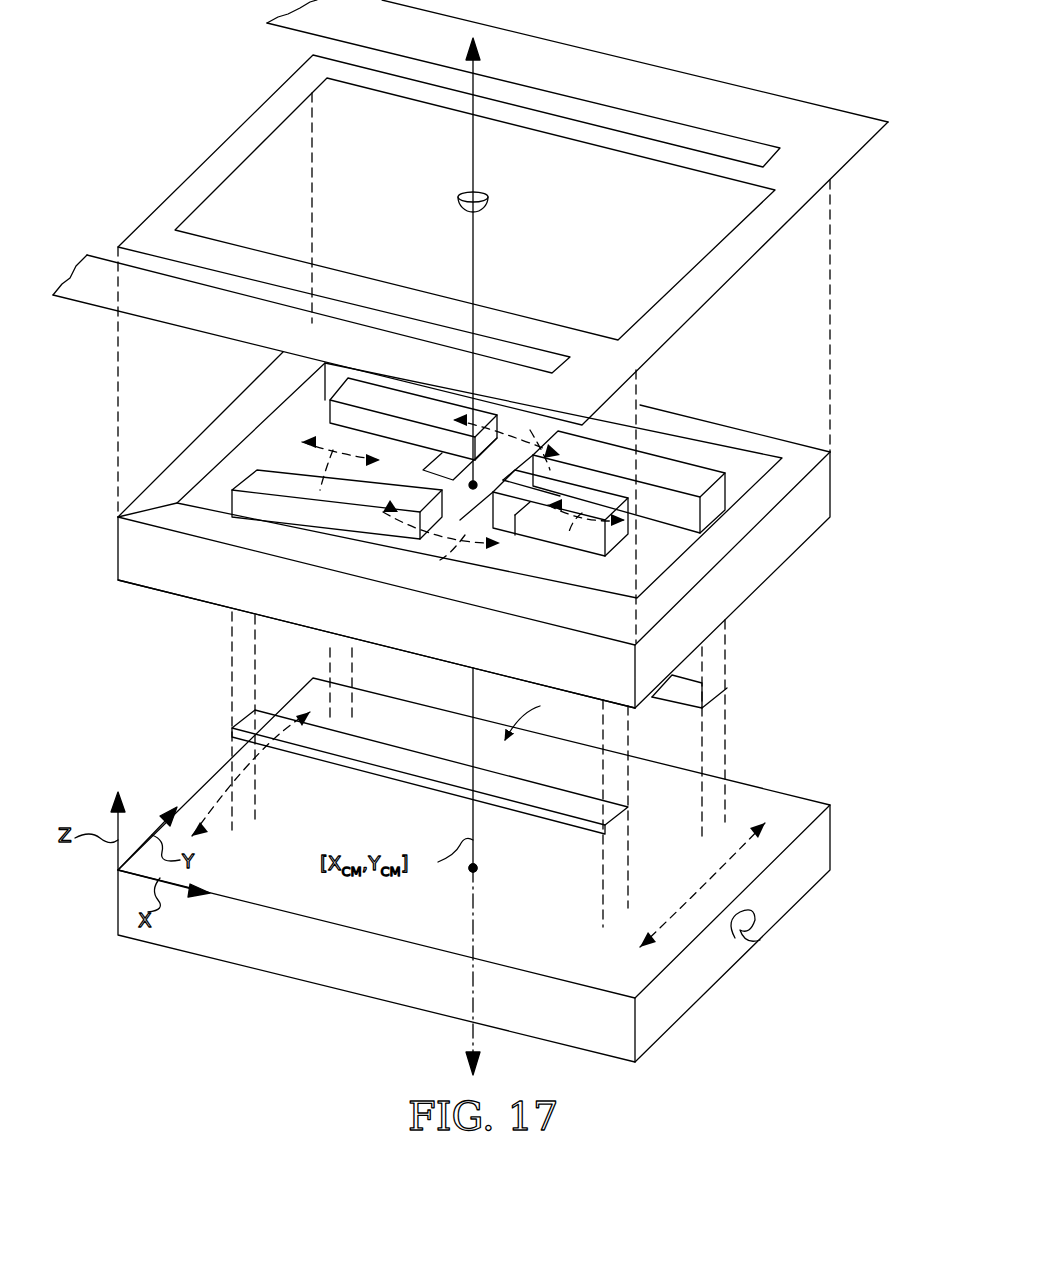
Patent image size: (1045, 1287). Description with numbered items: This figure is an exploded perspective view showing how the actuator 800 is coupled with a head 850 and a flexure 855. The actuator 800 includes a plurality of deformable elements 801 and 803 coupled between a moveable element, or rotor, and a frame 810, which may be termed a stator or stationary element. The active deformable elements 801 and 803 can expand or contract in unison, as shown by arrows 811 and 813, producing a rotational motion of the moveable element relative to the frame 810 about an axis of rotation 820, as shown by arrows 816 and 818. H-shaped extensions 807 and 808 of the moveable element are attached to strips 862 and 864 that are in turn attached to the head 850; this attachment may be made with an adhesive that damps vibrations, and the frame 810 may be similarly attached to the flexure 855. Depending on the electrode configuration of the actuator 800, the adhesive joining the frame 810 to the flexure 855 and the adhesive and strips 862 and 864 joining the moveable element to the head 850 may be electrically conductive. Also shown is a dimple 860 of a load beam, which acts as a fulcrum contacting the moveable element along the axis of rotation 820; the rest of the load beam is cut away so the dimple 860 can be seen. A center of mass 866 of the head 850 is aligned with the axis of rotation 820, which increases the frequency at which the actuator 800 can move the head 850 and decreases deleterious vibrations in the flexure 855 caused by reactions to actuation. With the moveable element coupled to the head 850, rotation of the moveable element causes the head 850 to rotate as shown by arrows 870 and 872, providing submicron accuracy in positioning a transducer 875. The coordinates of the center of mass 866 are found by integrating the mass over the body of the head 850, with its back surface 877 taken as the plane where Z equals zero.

The actuator 800 is at (800, 568).
The deformable element 801 is at (303, 428).
The deformable element 803 is at (650, 533).
The H-shaped extension 807 is at (667, 470).
The H-shaped extension 808 is at (240, 478).
The frame 810 is at (167, 580).
The arrow 811 is at (337, 504).
The arrow 813 is at (544, 526).
The arrow 816 is at (520, 457).
The arrow 818 is at (441, 552).
The axis of rotation 820 is at (475, 275).
The head 850 is at (785, 998).
The flexure 855 is at (735, 312).
The dimple 860 is at (490, 200).
The strip 862 is at (717, 690).
The strip 864 is at (400, 780).
The center of mass 866 is at (480, 868).
The arrow 870 is at (220, 787).
The arrow 872 is at (750, 867).
The transducer 875 is at (760, 930).
The back surface 877 is at (544, 719).